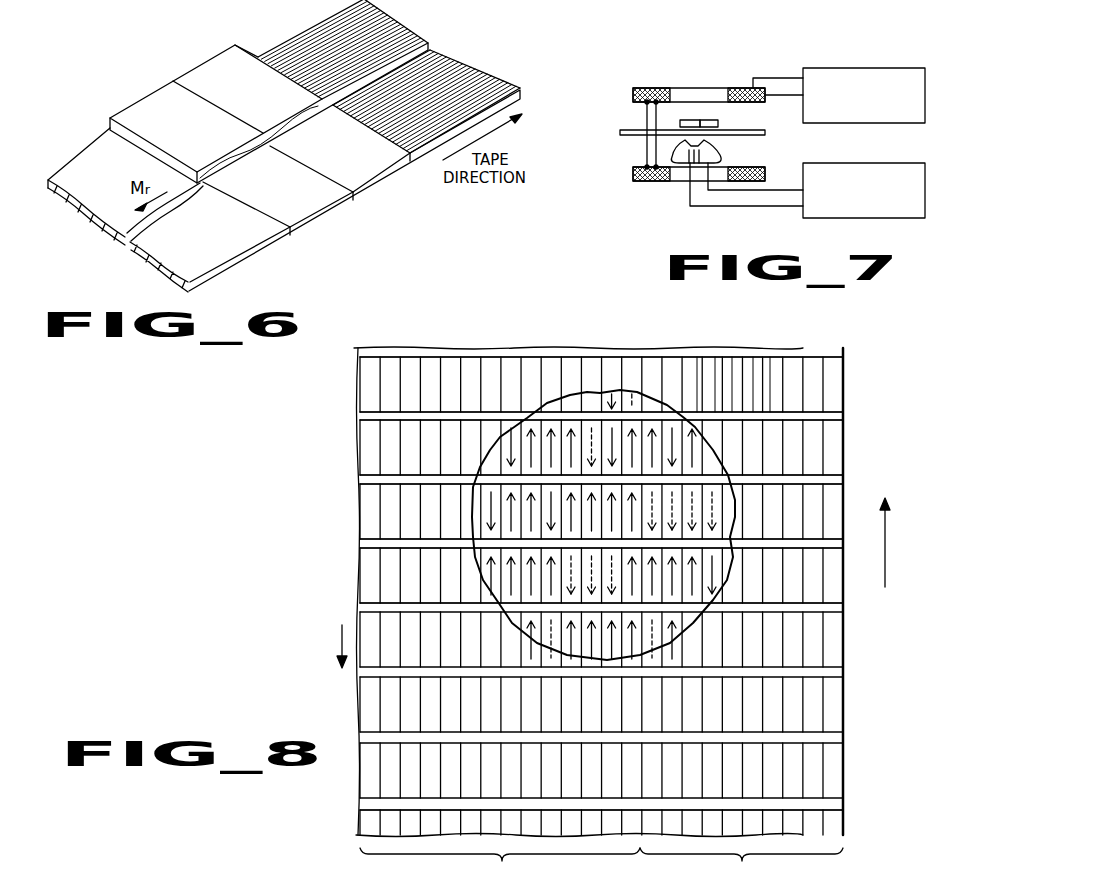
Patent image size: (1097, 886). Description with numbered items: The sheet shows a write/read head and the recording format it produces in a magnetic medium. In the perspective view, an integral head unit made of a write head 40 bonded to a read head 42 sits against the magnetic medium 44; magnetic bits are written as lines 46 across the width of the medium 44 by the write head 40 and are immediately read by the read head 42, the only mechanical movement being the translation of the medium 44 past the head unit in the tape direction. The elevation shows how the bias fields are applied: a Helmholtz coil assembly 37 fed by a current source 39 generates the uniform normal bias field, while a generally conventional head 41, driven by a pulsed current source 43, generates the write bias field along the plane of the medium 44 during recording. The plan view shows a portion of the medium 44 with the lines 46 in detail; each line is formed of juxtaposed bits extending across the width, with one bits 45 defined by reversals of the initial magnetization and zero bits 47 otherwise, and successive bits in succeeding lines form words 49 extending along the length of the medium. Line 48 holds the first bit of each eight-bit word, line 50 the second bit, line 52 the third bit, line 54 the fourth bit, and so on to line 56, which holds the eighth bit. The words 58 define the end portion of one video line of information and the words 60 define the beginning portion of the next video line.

In FIG. 7, the Helmholtz coil assembly 37 is at (633, 170).
In FIG. 7, the current source 39 is at (882, 68).
In FIG. 6, the write head 40 is at (157, 90).
In FIG. 7, the write head 40 is at (695, 118).
In FIG. 7, the head 41 is at (722, 157).
In FIG. 6, the read head 42 is at (222, 50).
In FIG. 7, the read head 42 is at (717, 122).
In FIG. 7, the pulsed current source 43 is at (883, 163).
In FIG. 6, the magnetic medium 44 is at (247, 253).
In FIG. 7, the magnetic medium 44 is at (763, 137).
In FIG. 8, the magnetic medium 44 is at (621, 587).
In FIG. 8, the "1" bits 45 is at (573, 630).
In FIG. 6, the lines 46 is at (306, 30).
In FIG. 8, the lines 46 is at (845, 490).
In FIG. 8, the "0" bits 47 is at (580, 550).
In FIG. 8, the line 48 is at (368, 381).
In FIG. 8, the words 49 is at (770, 362).
In FIG. 8, the line 50 is at (368, 444).
In FIG. 8, the line 52 is at (368, 506).
In FIG. 8, the line 54 is at (368, 570).
In FIG. 8, the line 56 is at (360, 818).
In FIG. 8, the words 58 is at (741, 867).
In FIG. 8, the words 60 is at (500, 867).